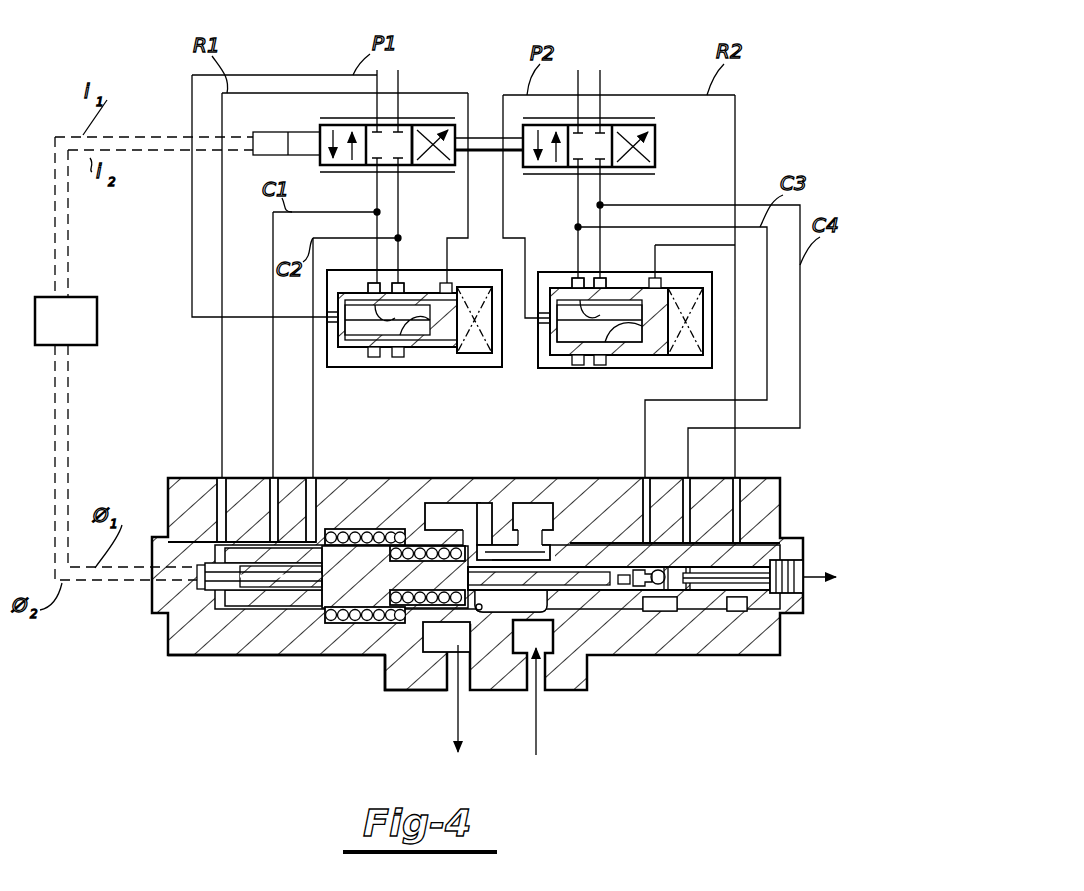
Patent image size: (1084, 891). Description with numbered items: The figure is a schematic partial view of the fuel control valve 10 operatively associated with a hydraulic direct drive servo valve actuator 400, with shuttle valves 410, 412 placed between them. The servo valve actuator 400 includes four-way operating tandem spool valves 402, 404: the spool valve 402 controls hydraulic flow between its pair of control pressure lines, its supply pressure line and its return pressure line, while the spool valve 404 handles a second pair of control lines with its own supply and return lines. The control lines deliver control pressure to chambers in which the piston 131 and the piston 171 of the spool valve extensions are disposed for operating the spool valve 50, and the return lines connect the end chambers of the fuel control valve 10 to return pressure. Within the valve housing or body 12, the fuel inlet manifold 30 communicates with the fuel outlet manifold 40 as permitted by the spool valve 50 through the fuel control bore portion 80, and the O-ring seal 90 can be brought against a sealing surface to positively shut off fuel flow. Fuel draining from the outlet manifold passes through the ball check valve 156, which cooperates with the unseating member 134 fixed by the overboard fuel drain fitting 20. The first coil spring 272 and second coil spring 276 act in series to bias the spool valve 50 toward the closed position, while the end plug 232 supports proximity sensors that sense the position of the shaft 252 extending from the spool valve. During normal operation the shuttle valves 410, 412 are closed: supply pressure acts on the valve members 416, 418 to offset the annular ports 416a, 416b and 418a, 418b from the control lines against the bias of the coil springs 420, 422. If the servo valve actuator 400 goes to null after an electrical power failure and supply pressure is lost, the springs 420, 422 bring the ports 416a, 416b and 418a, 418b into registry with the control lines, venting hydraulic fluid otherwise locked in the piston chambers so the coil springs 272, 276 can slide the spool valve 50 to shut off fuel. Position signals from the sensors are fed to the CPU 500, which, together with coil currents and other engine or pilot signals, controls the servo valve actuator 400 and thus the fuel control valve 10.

The hydraulic direct drive servo valve actuator 400 is at (298, 118).
The 4-way operating tandem spool valve 402 is at (421, 116).
The 4-way operating tandem spool valve 404 is at (622, 116).
The shuttle valve 410 is at (399, 378).
The shuttle valve 412 is at (628, 375).
The valve member 416 is at (363, 340).
The annular port 416a is at (370, 297).
The annular port 416b is at (413, 307).
The valve member 418 is at (583, 340).
The annular port 418a is at (592, 300).
The annular port 418b is at (626, 300).
The coil spring 420 is at (473, 333).
The coil spring 422 is at (684, 298).
The CPU 500 is at (90, 338).
The fuel control valve 10 is at (241, 680).
The valve housing or body 12 is at (327, 655).
The overboard fuel drain fitting 20 is at (799, 548).
The annular fuel inlet manifold 30 is at (557, 640).
The annular fuel outlet manifold 40 is at (440, 648).
The fuel control bore portion 80 is at (505, 640).
The spool valve 50 is at (547, 545).
The resilient O-ring seal 90 is at (478, 540).
The piston 131 is at (288, 542).
The unseating member 134 is at (728, 612).
The ball check valve 156 is at (642, 612).
The piston 171 is at (700, 618).
The end plug 232 is at (222, 590).
The shaft 252 is at (235, 582).
The first coil spring 272 is at (413, 546).
The second coil spring 276 is at (357, 529).